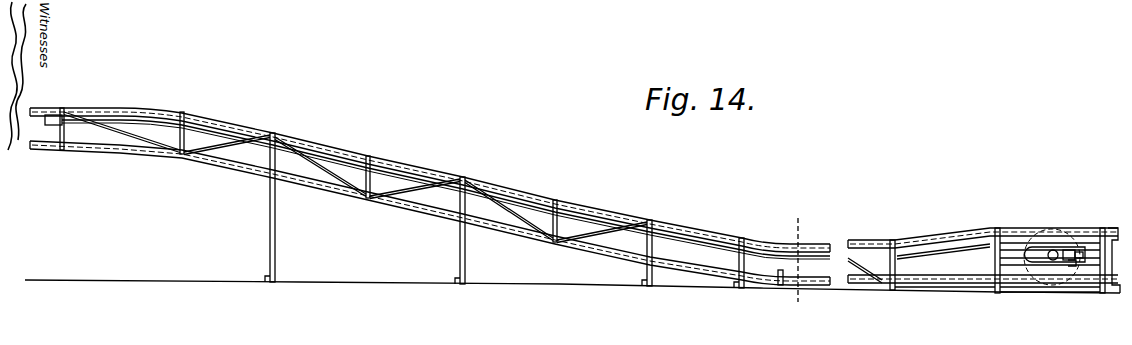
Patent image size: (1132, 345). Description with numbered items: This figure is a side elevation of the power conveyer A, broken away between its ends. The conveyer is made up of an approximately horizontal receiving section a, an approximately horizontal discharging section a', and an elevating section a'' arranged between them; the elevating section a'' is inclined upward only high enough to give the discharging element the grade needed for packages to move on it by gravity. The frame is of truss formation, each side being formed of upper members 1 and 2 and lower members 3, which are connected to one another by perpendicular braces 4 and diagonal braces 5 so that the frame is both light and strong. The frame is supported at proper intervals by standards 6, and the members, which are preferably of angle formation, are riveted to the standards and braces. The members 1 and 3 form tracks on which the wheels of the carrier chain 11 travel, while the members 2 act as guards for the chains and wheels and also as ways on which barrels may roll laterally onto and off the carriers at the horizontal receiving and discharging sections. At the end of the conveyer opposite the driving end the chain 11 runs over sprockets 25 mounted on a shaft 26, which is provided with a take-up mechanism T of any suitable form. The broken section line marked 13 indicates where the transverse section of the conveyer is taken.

The upper member 1 is at (600, 220).
The upper member 2 is at (576, 202).
The lower member 3 is at (610, 250).
The perpendicular brace 4 is at (376, 170).
The diagonal brace 5 is at (438, 180).
The standard 6 is at (278, 233).
The carrier chain 11 is at (208, 121).
The section line 13 is at (797, 261).
The sprocket 25 is at (1076, 265).
The shaft 26 is at (1051, 252).
The receiving section a is at (984, 254).
The discharging section a' is at (57, 105).
The elevating section a'' is at (343, 133).
The power conveyer A is at (553, 161).
The take-up mechanism T is at (1069, 254).